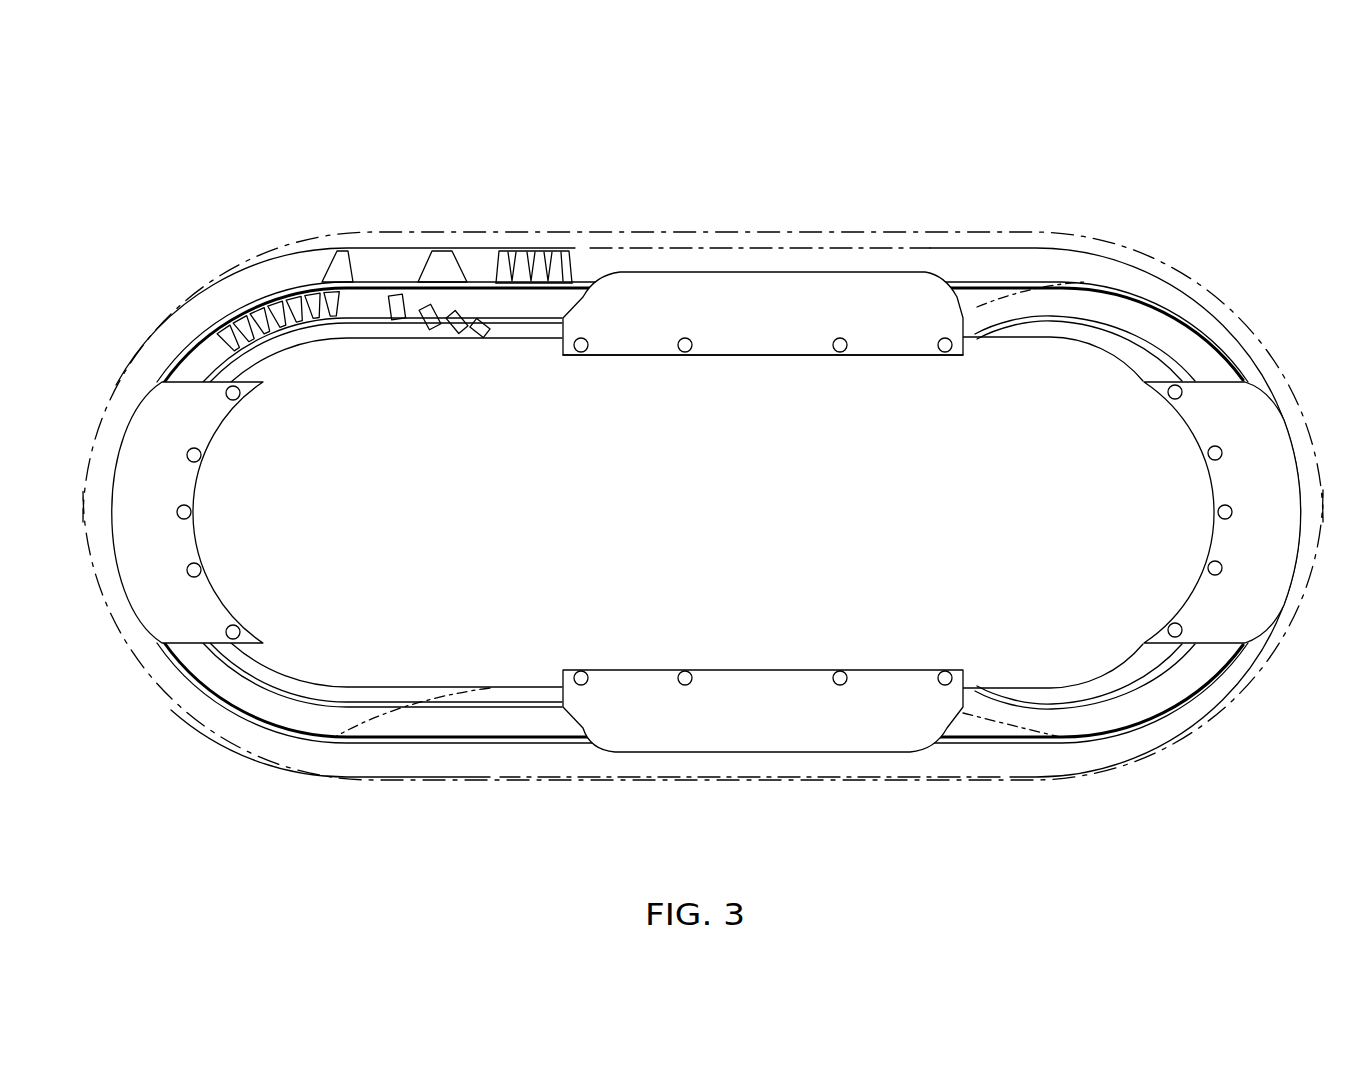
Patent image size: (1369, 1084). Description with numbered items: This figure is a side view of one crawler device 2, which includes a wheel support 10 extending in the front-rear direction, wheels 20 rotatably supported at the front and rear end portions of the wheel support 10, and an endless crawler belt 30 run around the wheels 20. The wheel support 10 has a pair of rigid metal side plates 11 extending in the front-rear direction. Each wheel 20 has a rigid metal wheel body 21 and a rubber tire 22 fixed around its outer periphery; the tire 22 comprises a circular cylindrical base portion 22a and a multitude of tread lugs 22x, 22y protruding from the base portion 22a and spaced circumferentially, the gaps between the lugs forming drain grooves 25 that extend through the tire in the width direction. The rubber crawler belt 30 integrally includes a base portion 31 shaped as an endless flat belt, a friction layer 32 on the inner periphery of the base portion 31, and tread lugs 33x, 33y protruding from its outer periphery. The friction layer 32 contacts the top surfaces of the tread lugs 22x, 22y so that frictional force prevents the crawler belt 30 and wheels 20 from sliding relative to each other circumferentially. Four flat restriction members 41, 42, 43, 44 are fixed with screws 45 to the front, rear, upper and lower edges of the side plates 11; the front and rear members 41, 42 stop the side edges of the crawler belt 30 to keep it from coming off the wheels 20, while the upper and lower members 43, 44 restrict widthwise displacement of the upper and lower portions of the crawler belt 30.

The crawler device 2 is at (1046, 232).
The wheel support 10 is at (740, 405).
The side plate 11 is at (655, 390).
The wheel 20 is at (215, 358).
The wheel body 21 is at (360, 330).
The tire 22 is at (699, 512).
The base portion 22a is at (328, 300).
The tread lug 22x is at (310, 318).
The tread lug 22y is at (262, 333).
The drain groove 25 is at (340, 249).
The crawler belt 30 is at (527, 267).
The base portion 31 is at (477, 282).
The friction layer 32 is at (528, 293).
The tread lug 33x is at (443, 260).
The tread lug 33y is at (557, 280).
The restriction member 41 is at (180, 545).
The restriction member 42 is at (1225, 490).
The restriction member 43 is at (897, 330).
The restriction member 44 is at (890, 690).
The screw 45 is at (840, 352).